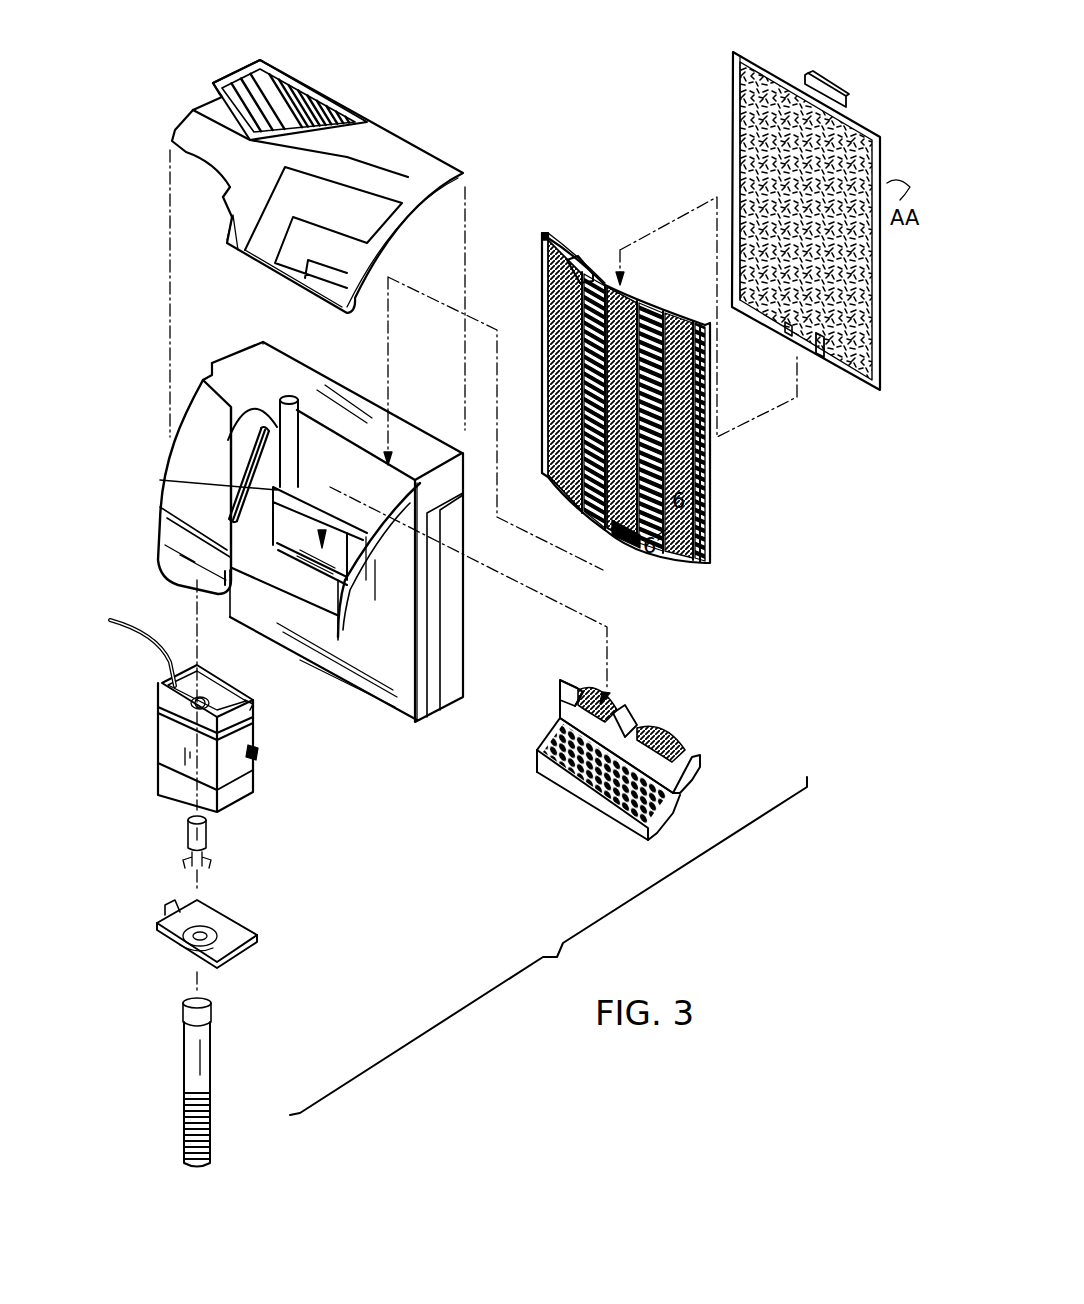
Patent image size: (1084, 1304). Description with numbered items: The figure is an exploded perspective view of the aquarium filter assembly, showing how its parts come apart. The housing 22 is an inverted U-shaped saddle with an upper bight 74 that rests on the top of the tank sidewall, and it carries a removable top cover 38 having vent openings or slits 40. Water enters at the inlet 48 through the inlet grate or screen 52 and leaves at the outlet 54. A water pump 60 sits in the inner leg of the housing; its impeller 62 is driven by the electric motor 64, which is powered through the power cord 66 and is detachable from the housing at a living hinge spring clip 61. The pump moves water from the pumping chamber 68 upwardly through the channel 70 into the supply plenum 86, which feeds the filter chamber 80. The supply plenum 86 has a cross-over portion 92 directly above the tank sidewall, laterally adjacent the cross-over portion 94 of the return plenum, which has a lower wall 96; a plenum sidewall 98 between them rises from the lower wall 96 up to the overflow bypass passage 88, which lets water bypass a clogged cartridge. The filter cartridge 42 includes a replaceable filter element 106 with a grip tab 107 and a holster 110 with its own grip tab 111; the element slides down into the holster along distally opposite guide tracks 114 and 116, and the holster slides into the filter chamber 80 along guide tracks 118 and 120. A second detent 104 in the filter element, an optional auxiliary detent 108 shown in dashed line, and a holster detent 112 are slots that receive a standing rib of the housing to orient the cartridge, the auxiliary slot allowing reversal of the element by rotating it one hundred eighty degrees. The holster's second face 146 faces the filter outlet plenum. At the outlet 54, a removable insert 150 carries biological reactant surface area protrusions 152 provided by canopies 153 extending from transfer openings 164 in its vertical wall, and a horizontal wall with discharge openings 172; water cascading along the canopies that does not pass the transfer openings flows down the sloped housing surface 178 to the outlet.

The housing 22 is at (217, 370).
The removable top cover 38 is at (387, 130).
The vent openings 40 is at (305, 92).
The filter cartridge 42 is at (720, 35).
The inlet 48 is at (215, 1046).
The inlet grate 52 is at (212, 1122).
The outlet 54 is at (307, 613).
The water pump 60 is at (157, 745).
The living hinge spring clip 61 is at (260, 750).
The impeller 62 is at (212, 852).
The electric motor 64 is at (210, 700).
The power cord 66 is at (133, 637).
The pumping chamber 68 is at (232, 920).
The channel 70 is at (250, 705).
The upper bight 74 is at (407, 567).
The filter chamber 80 is at (332, 427).
The supply plenum 86 is at (240, 390).
The overflow bypass passage 88 is at (250, 412).
The cross-over portion of supply plenum 92 is at (167, 421).
The cross-over portion of return plenum 94 is at (157, 513).
The lower wall 96 is at (300, 503).
The plenum sidewall 98 is at (233, 470).
The second detent 104 is at (818, 357).
The replaceable filter element 106 is at (857, 123).
The grip tab 107 is at (823, 75).
The auxiliary detent 108 is at (788, 333).
The holster 110 is at (637, 307).
The grip tab 111 is at (580, 262).
The holster detent 112 is at (620, 530).
The guide track 114 is at (560, 247).
The guide track 116 is at (703, 320).
The guide track 118 is at (303, 377).
The guide track 120 is at (440, 517).
The second face of holster 146 is at (543, 293).
The removable insert 150 is at (735, 785).
The biological reactant surface area protrusions 152 is at (670, 740).
The canopies 153 is at (608, 700).
The transfer openings 164 is at (560, 735).
The discharge openings 172 is at (537, 752).
The sloped housing surface 178 is at (307, 607).